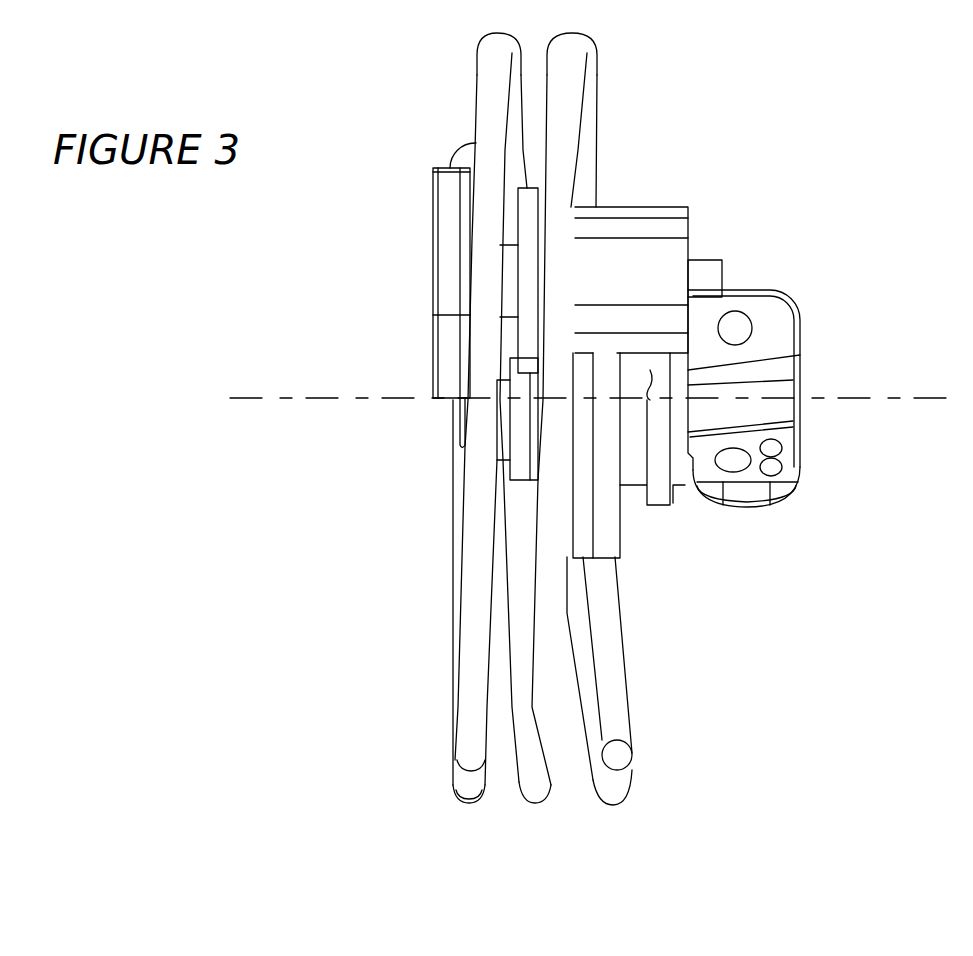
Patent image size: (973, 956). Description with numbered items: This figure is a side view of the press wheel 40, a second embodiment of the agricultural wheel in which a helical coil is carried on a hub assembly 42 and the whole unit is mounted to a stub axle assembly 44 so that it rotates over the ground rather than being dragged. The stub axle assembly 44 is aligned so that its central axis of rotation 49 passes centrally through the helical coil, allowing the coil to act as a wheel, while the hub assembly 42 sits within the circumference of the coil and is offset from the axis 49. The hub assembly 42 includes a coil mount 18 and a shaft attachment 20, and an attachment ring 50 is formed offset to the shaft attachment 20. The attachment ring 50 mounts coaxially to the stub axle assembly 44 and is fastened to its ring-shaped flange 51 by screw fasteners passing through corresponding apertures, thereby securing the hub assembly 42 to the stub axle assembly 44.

The coil mount 18 is at (450, 247).
The shaft attachment 20 is at (662, 232).
The press wheel 40 is at (806, 118).
The hub assembly 42 is at (628, 205).
The stub axle assembly 44 is at (808, 318).
The central axis of rotation 49 is at (259, 397).
The attachment ring 50 is at (578, 543).
The ring-shaped flange 51 is at (610, 528).